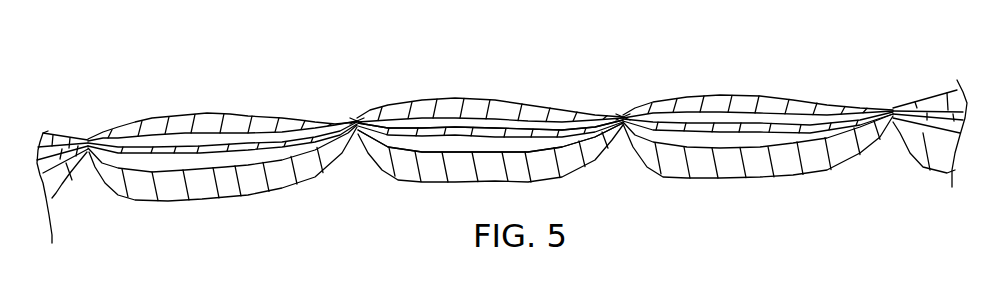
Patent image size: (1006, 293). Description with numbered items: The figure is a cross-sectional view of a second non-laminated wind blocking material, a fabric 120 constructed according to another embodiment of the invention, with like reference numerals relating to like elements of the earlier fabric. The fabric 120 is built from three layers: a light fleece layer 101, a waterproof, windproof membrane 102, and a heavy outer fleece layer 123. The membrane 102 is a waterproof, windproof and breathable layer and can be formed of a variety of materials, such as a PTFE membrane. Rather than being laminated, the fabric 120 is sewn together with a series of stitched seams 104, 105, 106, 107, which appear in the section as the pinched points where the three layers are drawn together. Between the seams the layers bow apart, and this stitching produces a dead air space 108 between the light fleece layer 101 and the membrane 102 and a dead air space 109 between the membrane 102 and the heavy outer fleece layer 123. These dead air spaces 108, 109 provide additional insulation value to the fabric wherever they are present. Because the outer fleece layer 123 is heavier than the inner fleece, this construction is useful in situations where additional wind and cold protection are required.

The light fleece layer 101 is at (157, 117).
The waterproof, windproof membrane 102 is at (197, 151).
The stitched seam 104 is at (87, 140).
The stitched seam 105 is at (357, 120).
The stitched seam 106 is at (625, 115).
The stitched seam 107 is at (894, 110).
The dead air space 108 is at (403, 125).
The dead air space 109 is at (410, 148).
The fabric 120 is at (522, 76).
The heavy outer fleece layer 123 is at (247, 182).